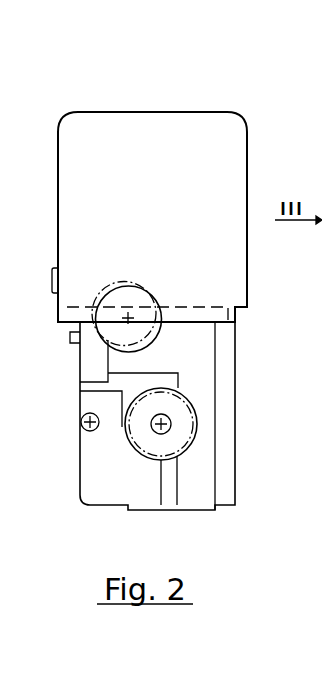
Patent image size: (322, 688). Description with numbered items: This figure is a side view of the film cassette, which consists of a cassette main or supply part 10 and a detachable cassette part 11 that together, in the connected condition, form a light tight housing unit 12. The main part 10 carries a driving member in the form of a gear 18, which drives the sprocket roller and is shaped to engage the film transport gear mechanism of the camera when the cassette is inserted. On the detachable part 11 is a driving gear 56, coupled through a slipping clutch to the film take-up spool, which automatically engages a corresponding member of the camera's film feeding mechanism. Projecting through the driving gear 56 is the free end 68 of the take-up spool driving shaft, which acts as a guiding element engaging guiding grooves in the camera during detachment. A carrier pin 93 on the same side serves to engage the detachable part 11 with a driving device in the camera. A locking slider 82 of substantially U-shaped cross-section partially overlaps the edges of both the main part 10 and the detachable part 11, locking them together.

The cassette main part 10 is at (122, 123).
The light tight housing unit 12 is at (247, 168).
The driving gear 18 is at (162, 327).
The locking slider 82 is at (90, 367).
The carrier pin 93 is at (81, 417).
The free end of driving shaft 68 is at (171, 418).
The driving gear 56 is at (178, 437).
The detachable cassette part 11 is at (87, 486).